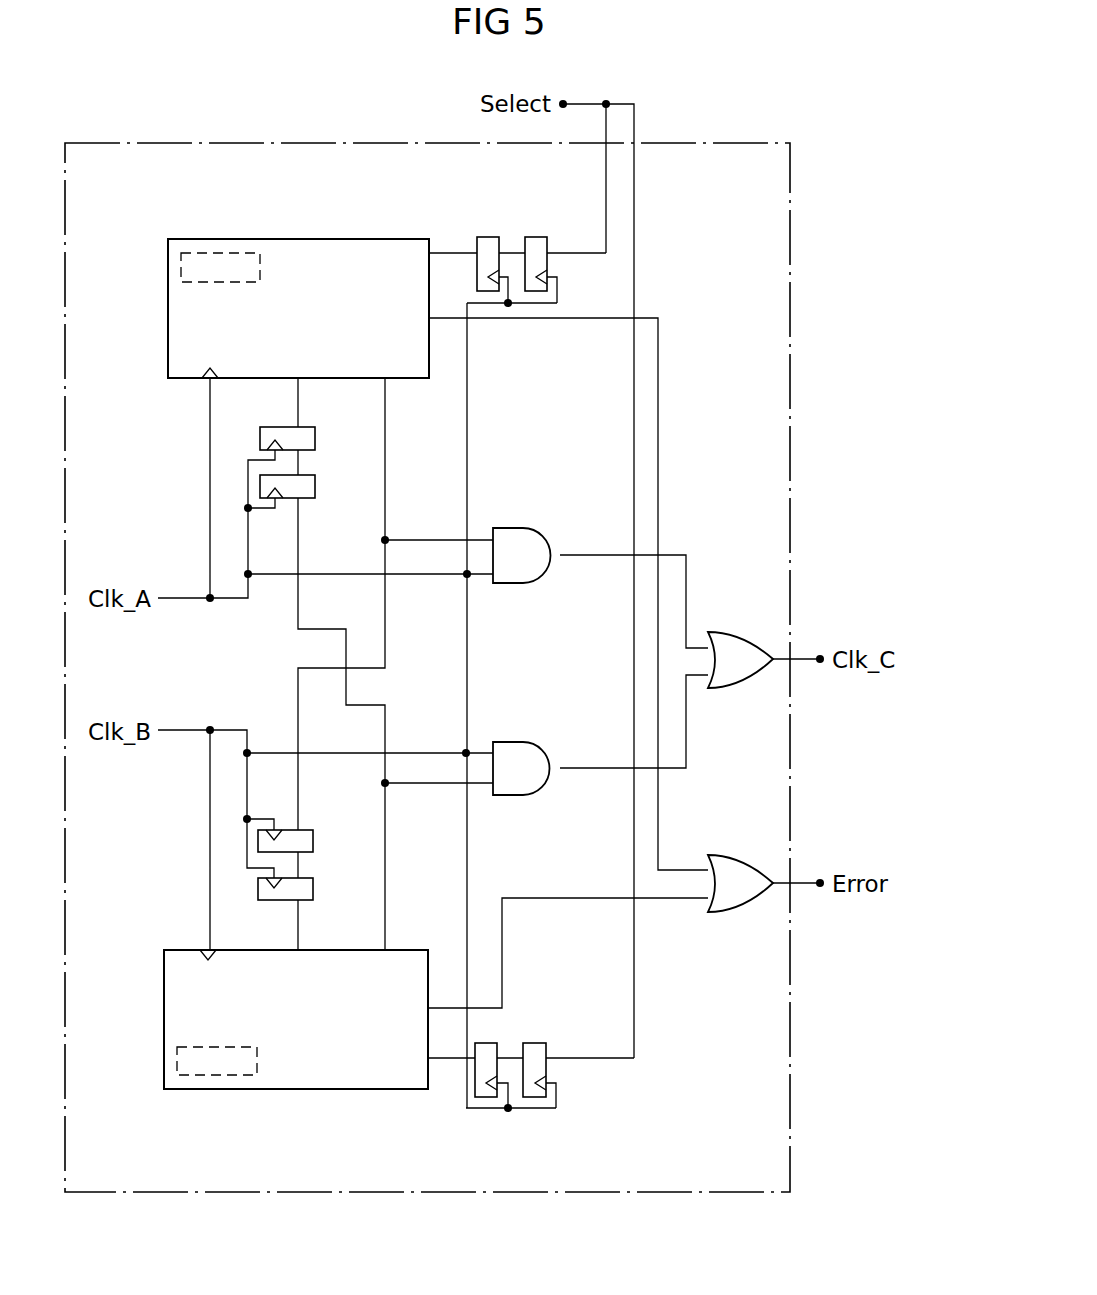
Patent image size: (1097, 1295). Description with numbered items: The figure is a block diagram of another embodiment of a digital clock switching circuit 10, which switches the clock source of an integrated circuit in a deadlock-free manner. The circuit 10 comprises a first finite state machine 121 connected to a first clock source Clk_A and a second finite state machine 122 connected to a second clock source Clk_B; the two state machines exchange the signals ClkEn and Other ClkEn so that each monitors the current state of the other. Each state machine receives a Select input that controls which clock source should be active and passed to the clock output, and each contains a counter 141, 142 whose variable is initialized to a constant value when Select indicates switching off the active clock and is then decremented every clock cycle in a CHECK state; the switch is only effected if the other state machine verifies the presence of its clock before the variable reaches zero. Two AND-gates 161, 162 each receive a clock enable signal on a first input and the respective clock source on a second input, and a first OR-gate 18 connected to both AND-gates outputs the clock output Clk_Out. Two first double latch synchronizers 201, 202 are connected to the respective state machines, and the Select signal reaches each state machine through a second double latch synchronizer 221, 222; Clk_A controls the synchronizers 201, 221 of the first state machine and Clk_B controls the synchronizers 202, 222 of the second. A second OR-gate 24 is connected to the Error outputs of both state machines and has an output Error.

The digital clock switching circuit 10 is at (470, 1194).
The first finite state machine 121 is at (298, 238).
The second finite state machine 122 is at (293, 1092).
The counter 141 is at (181, 272).
The counter 142 is at (177, 1058).
The AND-gate 161 is at (515, 527).
The AND-gate 162 is at (515, 797).
The first OR-gate 18 is at (725, 631).
The first double latch synchronizer 201 is at (305, 498).
The first double latch synchronizer 202 is at (303, 828).
The second double latch synchronizer 221 is at (488, 237).
The second double latch synchronizer 222 is at (532, 1042).
The second OR-gate 24 is at (727, 854).